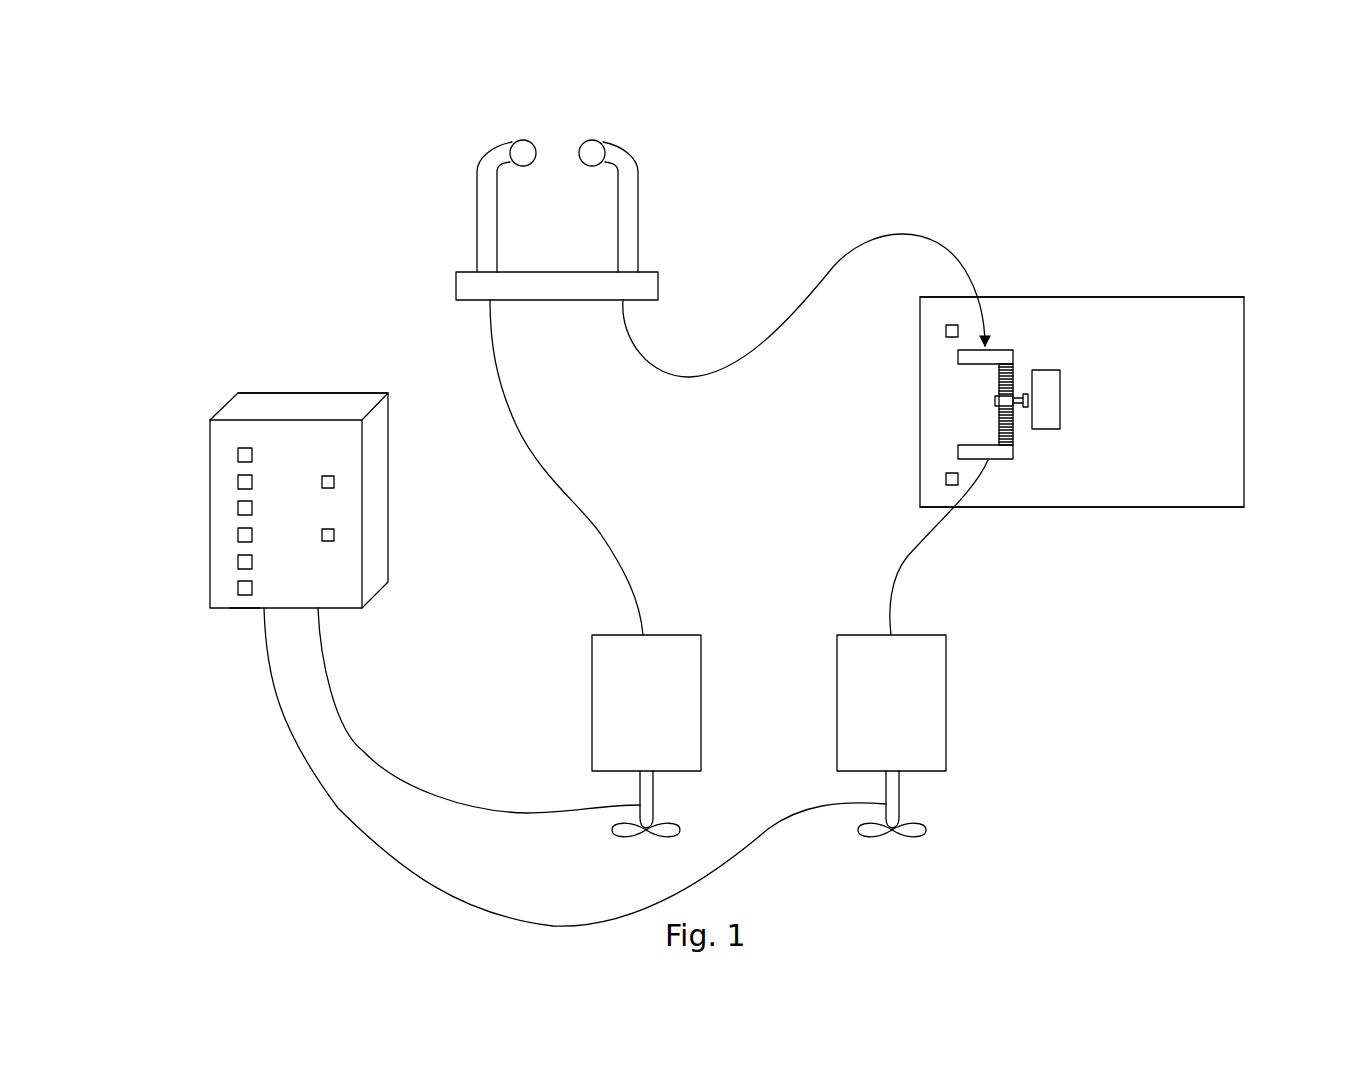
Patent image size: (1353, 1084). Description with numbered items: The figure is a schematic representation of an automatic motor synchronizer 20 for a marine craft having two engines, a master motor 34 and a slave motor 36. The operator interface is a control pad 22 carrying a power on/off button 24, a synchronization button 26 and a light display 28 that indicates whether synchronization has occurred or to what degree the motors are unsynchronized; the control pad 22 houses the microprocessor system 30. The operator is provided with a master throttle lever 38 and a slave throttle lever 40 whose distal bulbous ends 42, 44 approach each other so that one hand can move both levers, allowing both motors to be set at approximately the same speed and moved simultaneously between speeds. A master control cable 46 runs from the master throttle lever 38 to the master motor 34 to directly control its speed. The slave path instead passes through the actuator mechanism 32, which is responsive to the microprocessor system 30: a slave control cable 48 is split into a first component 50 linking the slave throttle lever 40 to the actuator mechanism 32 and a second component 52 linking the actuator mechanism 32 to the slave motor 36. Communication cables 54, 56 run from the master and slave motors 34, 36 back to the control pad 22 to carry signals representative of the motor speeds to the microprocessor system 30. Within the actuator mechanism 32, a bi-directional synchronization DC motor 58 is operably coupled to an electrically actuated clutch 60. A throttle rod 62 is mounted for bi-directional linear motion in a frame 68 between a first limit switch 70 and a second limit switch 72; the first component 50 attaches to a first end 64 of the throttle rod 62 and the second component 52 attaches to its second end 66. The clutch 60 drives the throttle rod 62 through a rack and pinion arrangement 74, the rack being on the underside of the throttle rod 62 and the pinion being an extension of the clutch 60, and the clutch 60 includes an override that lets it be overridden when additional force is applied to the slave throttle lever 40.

The automatic motor synchronizer 20 is at (323, 230).
The control pad 22 is at (210, 445).
The power on/off button 24 is at (334, 482).
The synchronization button 26 is at (334, 535).
The light display 28 is at (243, 609).
The microprocessor system 30 is at (292, 390).
The actuator mechanism 32 is at (1079, 400).
The master motor 34 is at (606, 684).
The slave motor 36 is at (935, 717).
The master throttle lever 38 is at (480, 174).
The slave throttle lever 40 is at (640, 188).
The distal bulbous end 42 is at (535, 140).
The distal bulbous end 44 is at (581, 141).
The master control cable 46 is at (573, 502).
The slave control cable 48 is at (996, 215).
The first component 50 is at (833, 266).
The second component 52 is at (893, 582).
The communication cable 54 is at (404, 772).
The communication cable 56 is at (406, 876).
The bi-directional synchronization DC motor 58 is at (1244, 336).
The electrically actuated clutch 60 is at (1022, 410).
The throttle rod 62 is at (1097, 313).
The first end 64 is at (987, 348).
The second end 66 is at (988, 460).
The frame 68 is at (1187, 507).
The first limit switch 70 is at (947, 338).
The second limit switch 72 is at (946, 478).
The rack and pinion arrangement 74 is at (1018, 450).